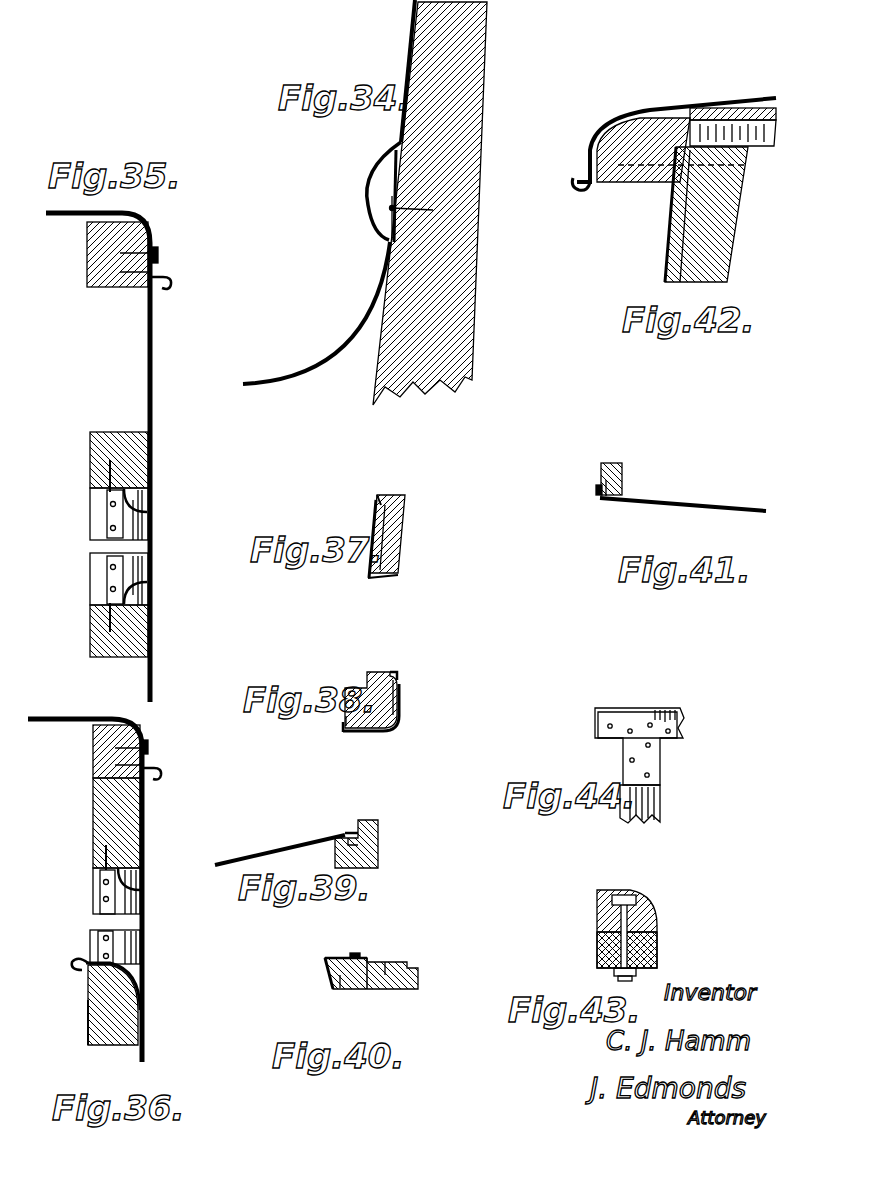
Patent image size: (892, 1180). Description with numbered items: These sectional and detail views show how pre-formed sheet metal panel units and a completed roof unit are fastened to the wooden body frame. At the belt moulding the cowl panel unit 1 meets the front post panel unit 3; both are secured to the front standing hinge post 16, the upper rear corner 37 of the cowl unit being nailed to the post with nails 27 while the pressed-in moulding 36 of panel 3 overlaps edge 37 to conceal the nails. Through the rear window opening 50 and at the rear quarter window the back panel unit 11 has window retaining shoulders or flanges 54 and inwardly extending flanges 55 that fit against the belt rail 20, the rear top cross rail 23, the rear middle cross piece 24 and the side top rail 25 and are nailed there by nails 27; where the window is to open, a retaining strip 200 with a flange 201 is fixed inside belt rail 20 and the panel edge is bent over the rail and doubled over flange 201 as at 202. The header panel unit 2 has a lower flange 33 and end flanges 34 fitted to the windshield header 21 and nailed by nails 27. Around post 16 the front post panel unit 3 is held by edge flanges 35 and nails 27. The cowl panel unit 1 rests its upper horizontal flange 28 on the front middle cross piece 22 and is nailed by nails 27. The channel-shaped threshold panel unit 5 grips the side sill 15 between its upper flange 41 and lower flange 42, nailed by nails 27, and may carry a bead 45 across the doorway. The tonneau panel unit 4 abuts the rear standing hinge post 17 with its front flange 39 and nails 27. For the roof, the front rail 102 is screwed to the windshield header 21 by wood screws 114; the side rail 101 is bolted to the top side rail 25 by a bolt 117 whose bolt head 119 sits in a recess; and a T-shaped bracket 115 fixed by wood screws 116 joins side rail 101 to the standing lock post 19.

In FIG. 34, the cowl panel unit 1 is at (340, 343).
In FIG. 39, the cowl panel unit 1 is at (255, 856).
In FIG. 37, the horizontal panel unit for the windshield header 2 is at (372, 556).
In FIG. 42, the horizontal panel unit for the windshield header 2 is at (672, 232).
In FIG. 34, the vertical front post panel unit 3 is at (412, 42).
In FIG. 38, the vertical front post panel unit 3 is at (395, 724).
In FIG. 41, the tonneau panel unit 4 is at (640, 509).
In FIG. 40, the threshold panel unit 5 is at (325, 968).
In FIG. 35, the panel unit for the upper part of the rear portion of the body 11 is at (154, 389).
In FIG. 36, the panel unit for the upper part of the rear portion of the body 11 is at (145, 819).
In FIG. 40, the side sill 15 is at (386, 990).
In FIG. 34, the front standing hinge post 16 is at (462, 153).
In FIG. 38, the front standing hinge post 16 is at (362, 688).
In FIG. 41, the rear standing hinge post 17 is at (623, 474).
In FIG. 44, the standing lock post 19 is at (660, 797).
In FIG. 36, the belt rail 20 is at (108, 987).
In FIG. 37, the windshield header 21 is at (398, 550).
In FIG. 39, the windshield header 21 is at (342, 843).
In FIG. 42, the windshield header 21 is at (730, 239).
In FIG. 39, the front middle cross piece 22 is at (379, 858).
In FIG. 35, the rear top cross rail 23 is at (100, 447).
In FIG. 35, the rear middle cross piece 24 is at (92, 650).
In FIG. 36, the side top rail 25 is at (105, 815).
In FIG. 43, the side top rail 25 is at (660, 947).
In FIG. 34, the nail 27 is at (392, 240).
In FIG. 35, the nail 27 is at (108, 482).
In FIG. 36, the nail 27 is at (104, 855).
In FIG. 37, the nail 27 is at (395, 571).
In FIG. 38, the nail 27 is at (399, 684).
In FIG. 40, the nail 27 is at (385, 962).
In FIG. 41, the nail 27 is at (608, 500).
In FIG. 42, the nail 27 is at (720, 264).
In FIG. 39, the upper horizontal flange 28 is at (355, 826).
In FIG. 37, the lower flange 33 is at (372, 580).
In FIG. 37, the end flange 34 is at (377, 500).
In FIG. 38, the flange 35 is at (395, 675).
In FIG. 34, the pressed-in moulding 36 is at (368, 190).
In FIG. 34, the upper rear corner of the cowl unit 37 is at (392, 200).
In FIG. 41, the front vertically extending flange 39 is at (598, 493).
In FIG. 40, the upper flange 41 is at (348, 955).
In FIG. 40, the lower flange 42 is at (346, 990).
In FIG. 40, the bead 45 is at (360, 954).
In FIG. 35, the rear window opening 50 is at (140, 549).
In FIG. 35, the window retaining shoulder or flange 54 is at (142, 520).
In FIG. 36, the window retaining shoulder or flange 54 is at (140, 945).
In FIG. 35, the flange 55 is at (112, 528).
In FIG. 36, the flange 55 is at (104, 898).
In FIG. 43, the side rail 101 is at (650, 920).
In FIG. 44, the side rail 101 is at (683, 720).
In FIG. 42, the rail 102 is at (635, 130).
In FIG. 42, the wood screw 114 is at (750, 166).
In FIG. 44, the T-shaped bracket 115 is at (638, 728).
In FIG. 44, the wood screw 116 is at (630, 759).
In FIG. 43, the bolt 117 is at (620, 932).
In FIG. 43, the bolt head 119 is at (630, 901).
In FIG. 36, the retaining strip 200 is at (88, 1022).
In FIG. 36, the flange 201 is at (82, 968).
In FIG. 36, the doubled-over edge 202 is at (72, 962).